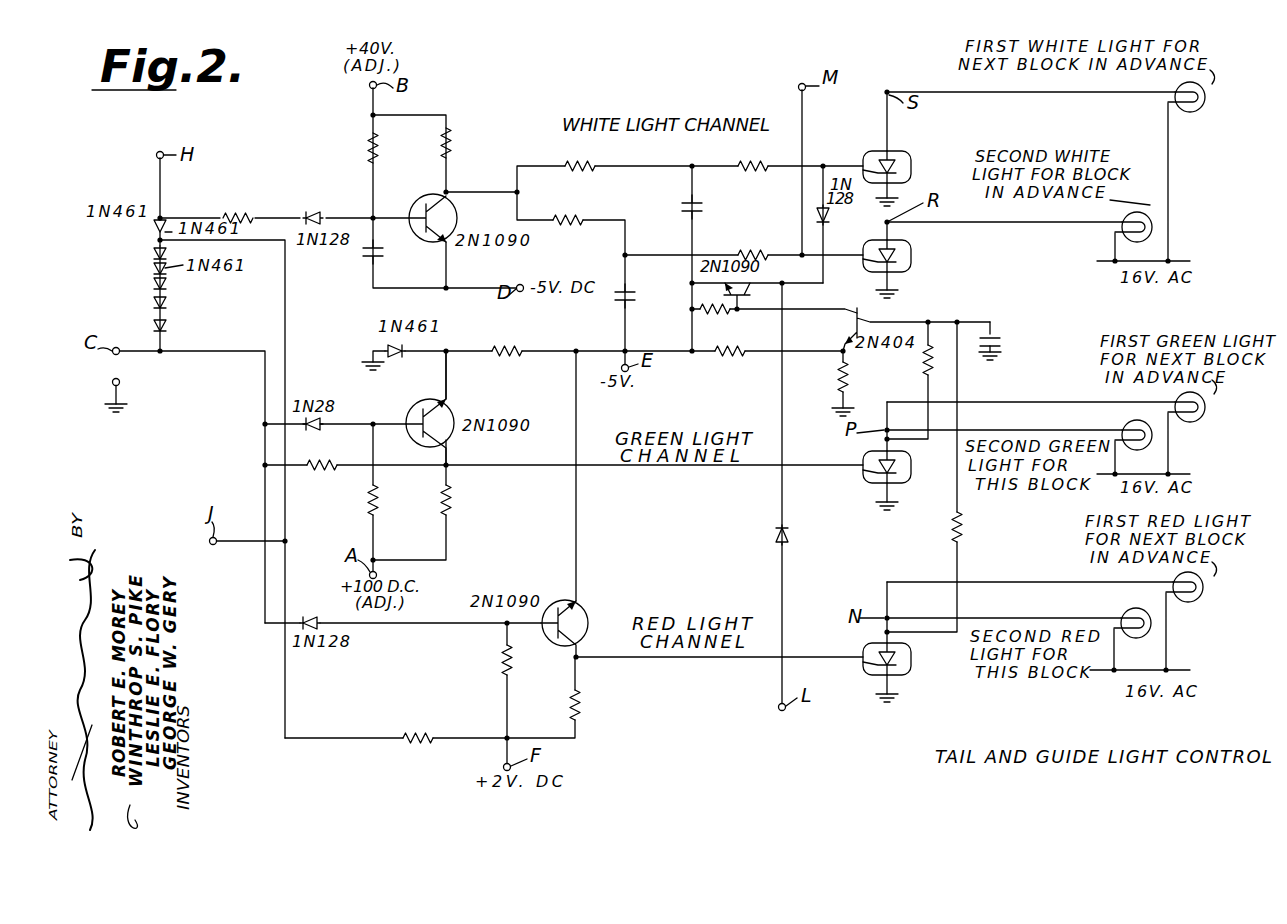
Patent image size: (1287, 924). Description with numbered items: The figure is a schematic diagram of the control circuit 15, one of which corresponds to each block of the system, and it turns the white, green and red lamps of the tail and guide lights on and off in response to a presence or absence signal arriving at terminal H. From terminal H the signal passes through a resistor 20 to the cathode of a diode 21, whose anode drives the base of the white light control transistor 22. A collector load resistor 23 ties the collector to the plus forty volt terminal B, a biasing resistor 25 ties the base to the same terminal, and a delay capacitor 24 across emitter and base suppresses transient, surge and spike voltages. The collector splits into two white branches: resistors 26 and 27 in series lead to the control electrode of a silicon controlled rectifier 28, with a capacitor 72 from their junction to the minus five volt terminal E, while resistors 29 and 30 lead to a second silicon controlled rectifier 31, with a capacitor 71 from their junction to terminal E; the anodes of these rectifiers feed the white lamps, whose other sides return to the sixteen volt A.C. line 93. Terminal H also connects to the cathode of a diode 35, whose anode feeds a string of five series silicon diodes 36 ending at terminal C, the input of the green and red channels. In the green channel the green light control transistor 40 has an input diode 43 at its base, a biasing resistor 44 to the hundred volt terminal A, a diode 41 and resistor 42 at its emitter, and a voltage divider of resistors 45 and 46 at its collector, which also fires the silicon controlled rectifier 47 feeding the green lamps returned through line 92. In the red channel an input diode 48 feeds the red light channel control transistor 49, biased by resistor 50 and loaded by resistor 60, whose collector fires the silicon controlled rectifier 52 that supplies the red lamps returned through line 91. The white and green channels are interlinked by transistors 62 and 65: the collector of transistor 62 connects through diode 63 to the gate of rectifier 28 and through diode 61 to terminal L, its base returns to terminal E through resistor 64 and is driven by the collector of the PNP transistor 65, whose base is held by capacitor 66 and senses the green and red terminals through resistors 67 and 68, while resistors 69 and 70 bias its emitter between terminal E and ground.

The control circuit 15 is at (633, 59).
The resistor 20 is at (232, 214).
The diode 21 is at (313, 208).
The white light control transistor 22 is at (418, 196).
The collector load resistor 23 is at (452, 148).
The delay capacitor 24 is at (383, 258).
The biasing resistor 25 is at (378, 150).
The resistor 26 is at (592, 164).
The resistor 27 is at (750, 170).
The silicon controlled rectifier 28 is at (902, 150).
The resistor 29 is at (583, 219).
The resistor 30 is at (750, 252).
The silicon controlled rectifier 31 is at (905, 252).
The diode 35 is at (152, 231).
The silicon diodes 36 is at (152, 296).
The green light control transistor 40 is at (450, 406).
The diode 41 is at (402, 358).
The resistor 42 is at (527, 347).
The input diode 43 is at (322, 418).
The biasing resistor 44 is at (380, 520).
The resistor 45 is at (328, 461).
The resistor 46 is at (455, 517).
The silicon controlled rectifier 47 is at (908, 474).
The input diode 48 is at (308, 613).
The red light channel control transistor 49 is at (585, 602).
The bias resistor 50 is at (515, 684).
The silicon controlled rectifier 52 is at (908, 666).
The resistor 60 is at (587, 710).
The diode 61 is at (795, 538).
The transistor 62 is at (752, 296).
The diode 63 is at (830, 222).
The resistor 64 is at (725, 313).
The transistor 65 is at (853, 326).
The capacitor 66 is at (1000, 337).
The resistor 67 is at (922, 368).
The resistor 68 is at (968, 552).
The resistor 69 is at (727, 360).
The resistor 70 is at (838, 372).
The capacitor 71 is at (636, 298).
The capacitor 72 is at (703, 210).
The 16 v. A.C. line 91 is at (1182, 670).
The 16 v. A.C. line 92 is at (1186, 474).
The 16 v. A.C. line 93 is at (1182, 259).